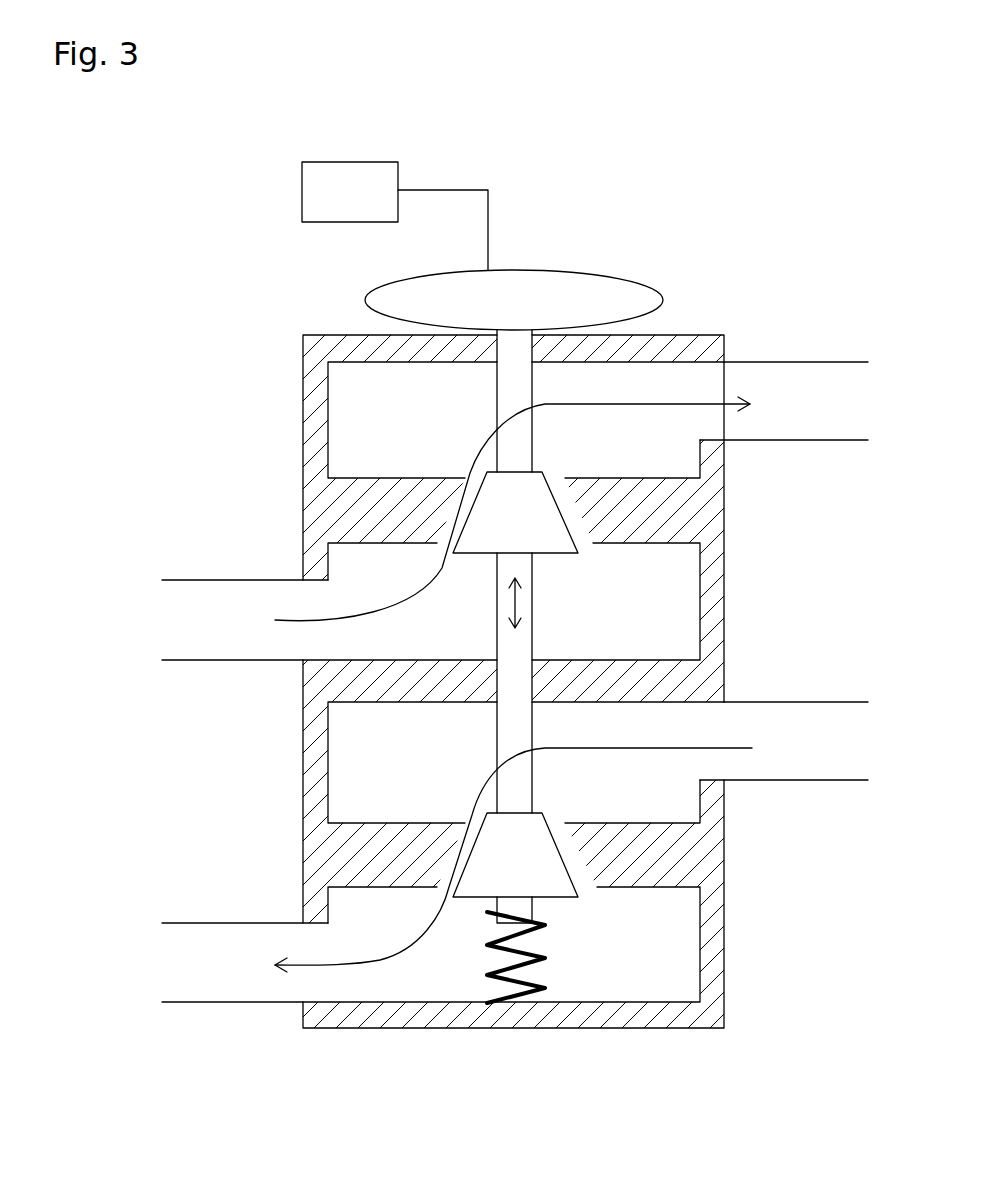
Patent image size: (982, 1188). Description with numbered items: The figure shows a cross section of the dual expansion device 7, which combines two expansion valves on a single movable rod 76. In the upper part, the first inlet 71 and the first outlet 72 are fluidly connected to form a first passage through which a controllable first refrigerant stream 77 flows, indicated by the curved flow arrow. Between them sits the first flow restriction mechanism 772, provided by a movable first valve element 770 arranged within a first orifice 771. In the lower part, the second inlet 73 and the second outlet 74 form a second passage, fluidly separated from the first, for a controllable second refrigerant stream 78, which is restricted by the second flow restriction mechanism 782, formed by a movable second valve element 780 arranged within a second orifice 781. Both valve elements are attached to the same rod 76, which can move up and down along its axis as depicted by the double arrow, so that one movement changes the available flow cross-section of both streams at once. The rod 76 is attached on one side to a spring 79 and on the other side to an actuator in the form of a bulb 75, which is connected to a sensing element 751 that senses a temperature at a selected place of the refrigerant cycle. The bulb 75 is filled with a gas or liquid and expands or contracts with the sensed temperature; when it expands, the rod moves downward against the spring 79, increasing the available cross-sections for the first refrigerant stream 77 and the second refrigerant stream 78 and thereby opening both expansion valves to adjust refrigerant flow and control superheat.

The dual expansion device 7 is at (760, 188).
The sensing element 751 is at (362, 177).
The bulb 75 is at (537, 287).
The movable rod 76 is at (535, 390).
The first outlet 72 is at (807, 377).
The first flow restriction mechanism 772 is at (462, 445).
The first valve element 770 is at (547, 482).
The first orifice 771 is at (570, 520).
The first inlet 71 is at (243, 600).
The first refrigerant stream 77 is at (415, 598).
The second inlet 73 is at (805, 717).
The second flow restriction mechanism 782 is at (462, 780).
The second valve element 780 is at (545, 825).
The second orifice 781 is at (570, 863).
The second outlet 74 is at (243, 942).
The second refrigerant stream 78 is at (415, 940).
The spring 79 is at (498, 950).